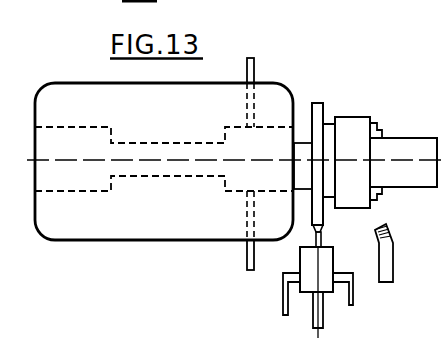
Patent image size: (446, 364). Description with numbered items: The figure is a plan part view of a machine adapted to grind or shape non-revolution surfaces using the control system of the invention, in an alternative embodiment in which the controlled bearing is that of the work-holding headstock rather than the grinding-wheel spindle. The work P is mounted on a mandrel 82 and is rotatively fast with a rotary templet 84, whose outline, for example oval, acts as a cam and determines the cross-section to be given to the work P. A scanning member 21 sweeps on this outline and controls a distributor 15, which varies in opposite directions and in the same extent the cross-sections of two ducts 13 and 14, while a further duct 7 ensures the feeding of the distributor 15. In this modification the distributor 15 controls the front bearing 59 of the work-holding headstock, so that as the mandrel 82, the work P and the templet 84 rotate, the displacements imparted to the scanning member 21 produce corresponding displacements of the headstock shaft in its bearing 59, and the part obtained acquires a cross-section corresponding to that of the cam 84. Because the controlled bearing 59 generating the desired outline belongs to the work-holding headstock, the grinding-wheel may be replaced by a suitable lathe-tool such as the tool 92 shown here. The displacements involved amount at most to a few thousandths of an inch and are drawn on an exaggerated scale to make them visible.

The duct 7 is at (322, 319).
The duct 13 is at (354, 299).
The duct 14 is at (283, 299).
The distributor 15 is at (300, 262).
The scanning member 21 is at (318, 236).
The front bearing 59 is at (264, 133).
The mandrel 82 is at (355, 120).
The rotary templet 84 is at (317, 103).
The lathe-tool 92 is at (393, 258).
The work P is at (414, 138).